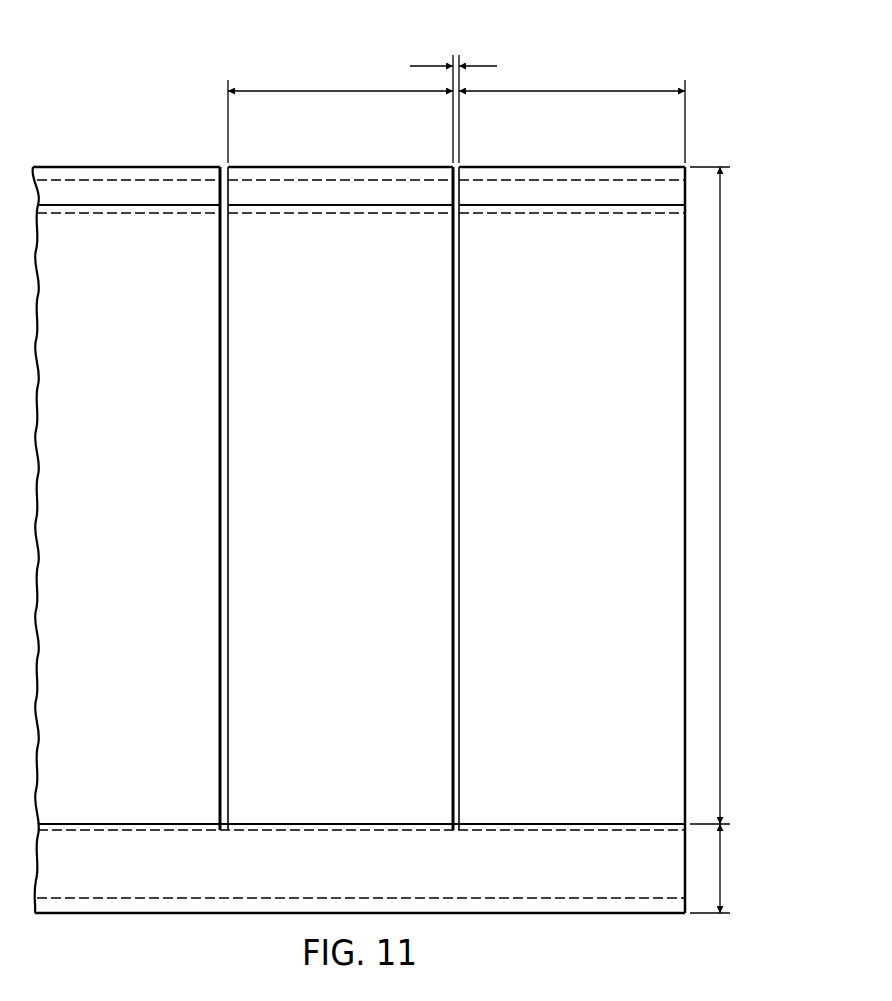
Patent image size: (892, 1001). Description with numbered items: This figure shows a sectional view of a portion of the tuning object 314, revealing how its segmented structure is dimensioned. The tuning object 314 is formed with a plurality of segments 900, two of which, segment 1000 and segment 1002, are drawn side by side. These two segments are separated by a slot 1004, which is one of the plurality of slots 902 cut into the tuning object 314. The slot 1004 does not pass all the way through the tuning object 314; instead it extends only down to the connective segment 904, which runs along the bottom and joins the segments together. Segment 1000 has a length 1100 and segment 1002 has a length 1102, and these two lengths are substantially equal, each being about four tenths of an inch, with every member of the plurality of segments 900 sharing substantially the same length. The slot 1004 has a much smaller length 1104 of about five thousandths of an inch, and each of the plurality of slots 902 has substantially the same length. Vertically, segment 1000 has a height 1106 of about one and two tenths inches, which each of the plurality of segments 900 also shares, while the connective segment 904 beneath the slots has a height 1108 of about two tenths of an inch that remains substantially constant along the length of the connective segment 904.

The tuning object 314 is at (128, 165).
The plurality of segments 900 is at (316, 164).
The plurality of slots 902 is at (459, 164).
The connective segment 904 is at (360, 877).
The segment 1000 is at (597, 530).
The segment 1002 is at (365, 530).
The slot 1004 is at (452, 310).
The length 1100 is at (572, 90).
The length 1102 is at (340, 90).
The length 1104 is at (478, 64).
The height 1106 is at (721, 495).
The height 1108 is at (721, 868).